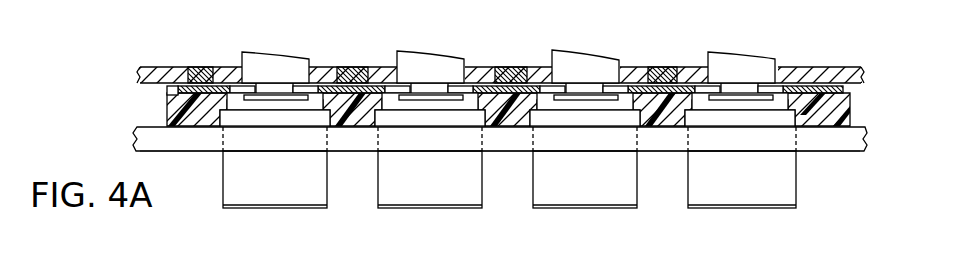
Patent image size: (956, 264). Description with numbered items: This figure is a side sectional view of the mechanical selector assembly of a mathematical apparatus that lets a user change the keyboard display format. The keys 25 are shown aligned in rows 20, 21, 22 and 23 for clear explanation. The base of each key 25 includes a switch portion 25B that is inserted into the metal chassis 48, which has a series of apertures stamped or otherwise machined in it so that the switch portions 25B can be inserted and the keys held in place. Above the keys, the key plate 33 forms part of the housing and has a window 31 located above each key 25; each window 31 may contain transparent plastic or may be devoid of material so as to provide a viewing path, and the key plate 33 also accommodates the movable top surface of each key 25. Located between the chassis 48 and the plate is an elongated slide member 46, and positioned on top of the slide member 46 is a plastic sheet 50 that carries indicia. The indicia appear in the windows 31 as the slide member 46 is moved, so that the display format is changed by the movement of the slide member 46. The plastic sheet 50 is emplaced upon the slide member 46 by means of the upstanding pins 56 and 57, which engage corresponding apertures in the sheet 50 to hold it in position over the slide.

The row 20 is at (290, 53).
The row 21 is at (450, 48).
The row 22 is at (605, 52).
The row 23 is at (752, 53).
The key 25 is at (259, 54).
The switch portion 25B is at (225, 168).
The window 31 is at (205, 67).
The key plate 33 is at (173, 67).
The slide member 46 is at (852, 116).
The metal chassis 48 is at (818, 145).
The plastic sheet 50 is at (848, 90).
The upstanding pin 56 is at (173, 88).
The upstanding pin 57 is at (837, 85).